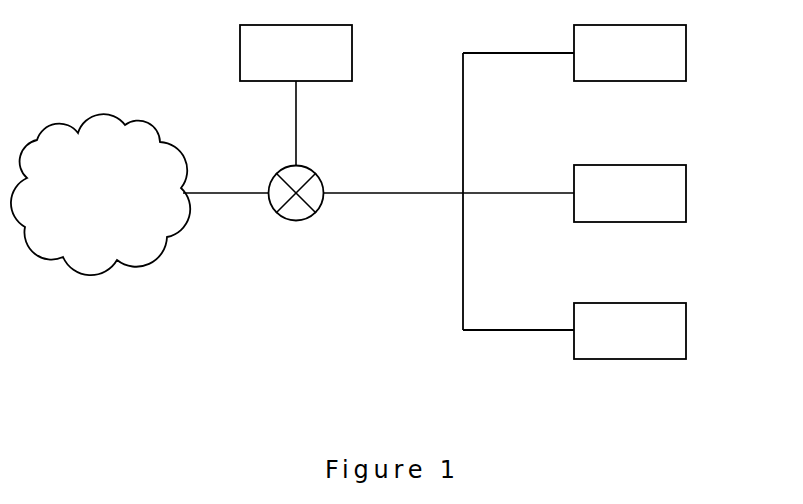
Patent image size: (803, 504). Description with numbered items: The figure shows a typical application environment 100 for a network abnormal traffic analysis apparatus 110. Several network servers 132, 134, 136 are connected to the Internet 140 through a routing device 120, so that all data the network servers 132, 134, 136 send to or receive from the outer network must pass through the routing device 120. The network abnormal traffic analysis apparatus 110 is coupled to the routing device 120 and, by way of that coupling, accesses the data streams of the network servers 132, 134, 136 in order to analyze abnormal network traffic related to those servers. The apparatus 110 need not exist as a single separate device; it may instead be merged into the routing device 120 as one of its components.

The application environment 100 is at (67, 350).
The network abnormal traffic analysis apparatus 110 is at (328, 95).
The routing device 120 is at (296, 219).
The network server 132 is at (667, 53).
The network server 134 is at (667, 193).
The network server 136 is at (667, 331).
The Internet 140 is at (100, 194).